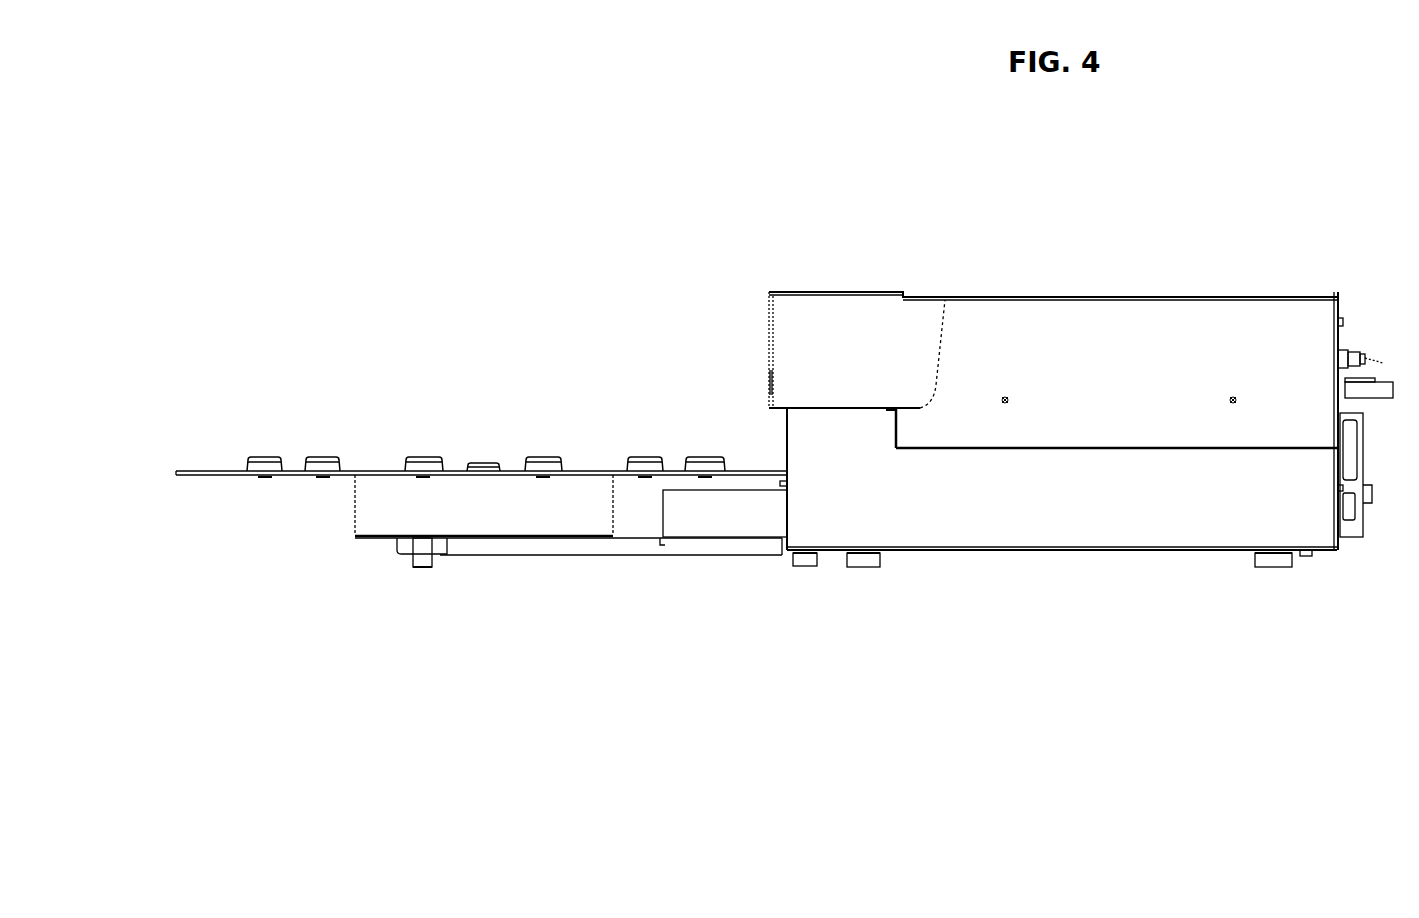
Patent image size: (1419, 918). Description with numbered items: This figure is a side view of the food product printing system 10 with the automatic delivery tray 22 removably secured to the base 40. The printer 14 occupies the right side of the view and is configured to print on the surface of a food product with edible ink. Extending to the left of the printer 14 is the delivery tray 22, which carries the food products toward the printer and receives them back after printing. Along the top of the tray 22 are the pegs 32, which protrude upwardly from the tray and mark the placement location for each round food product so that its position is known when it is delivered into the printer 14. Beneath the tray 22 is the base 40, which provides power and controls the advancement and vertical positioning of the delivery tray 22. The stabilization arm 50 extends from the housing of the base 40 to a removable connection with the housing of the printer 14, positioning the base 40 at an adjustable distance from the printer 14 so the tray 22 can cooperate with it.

The printing system 10 is at (310, 210).
The printer 14 is at (735, 254).
The delivery tray 22 is at (372, 440).
The pegs 32 is at (262, 458).
The base 40 is at (370, 512).
The stabilization arm 50 is at (618, 548).